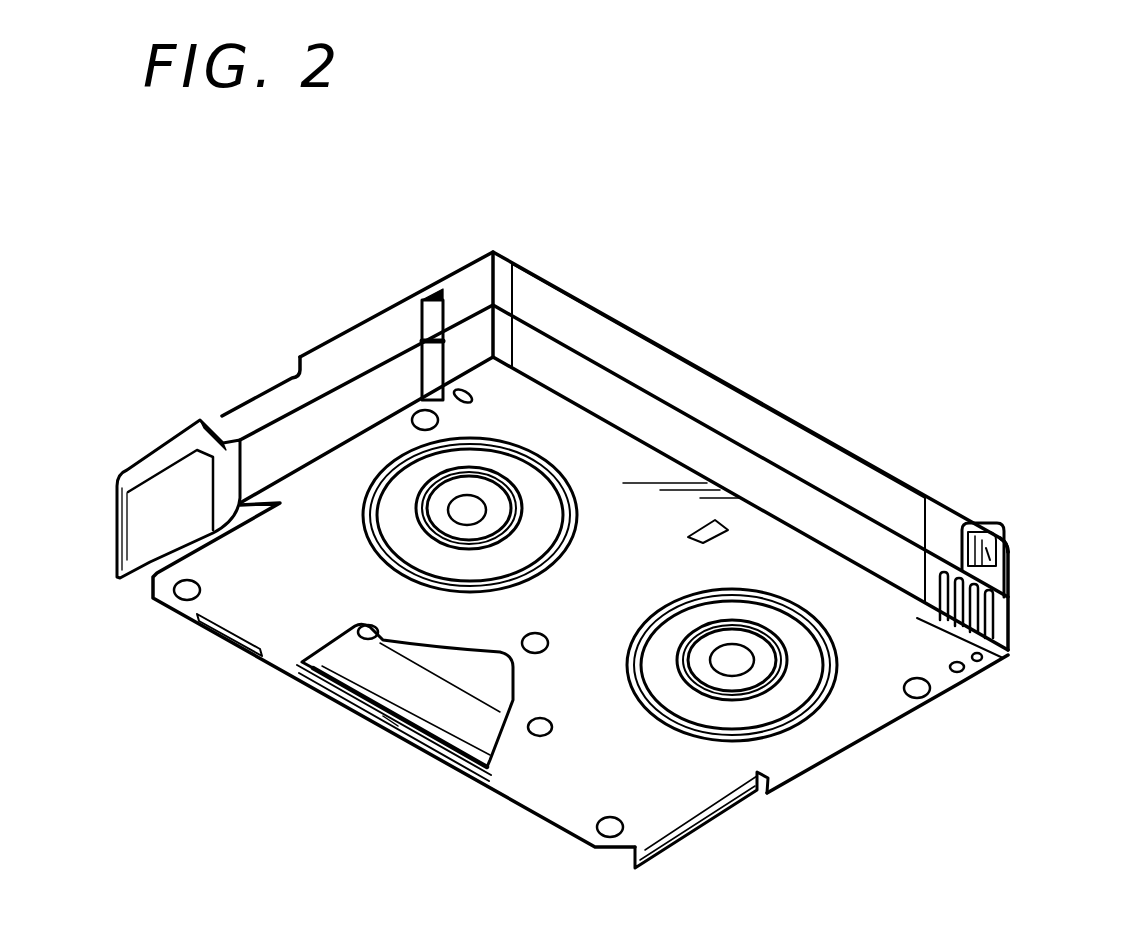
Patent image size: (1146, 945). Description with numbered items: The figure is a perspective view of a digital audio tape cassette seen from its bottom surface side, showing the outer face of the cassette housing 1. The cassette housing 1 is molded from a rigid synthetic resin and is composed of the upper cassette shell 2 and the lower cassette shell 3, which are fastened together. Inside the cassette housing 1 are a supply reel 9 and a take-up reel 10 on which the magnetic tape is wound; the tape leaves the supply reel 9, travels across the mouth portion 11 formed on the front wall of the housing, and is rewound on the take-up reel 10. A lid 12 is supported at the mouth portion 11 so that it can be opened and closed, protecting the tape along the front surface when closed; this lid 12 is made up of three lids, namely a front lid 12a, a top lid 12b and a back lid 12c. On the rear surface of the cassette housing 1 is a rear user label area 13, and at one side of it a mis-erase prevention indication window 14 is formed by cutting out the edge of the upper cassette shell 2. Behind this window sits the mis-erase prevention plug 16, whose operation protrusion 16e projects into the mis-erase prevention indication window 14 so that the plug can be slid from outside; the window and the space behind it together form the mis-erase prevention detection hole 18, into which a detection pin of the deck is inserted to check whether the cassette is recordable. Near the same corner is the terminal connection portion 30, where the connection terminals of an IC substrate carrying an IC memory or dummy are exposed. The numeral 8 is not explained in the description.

The cassette housing 1 is at (267, 254).
The upper cassette shell 2 is at (387, 330).
The lower cassette shell 3 is at (350, 407).
The positioning hole 8 is at (980, 667).
The supply reel 9 is at (517, 470).
The take-up reel 10 is at (780, 700).
The mouth portion 11 is at (383, 718).
The lid 12 is at (282, 637).
The front lid 12a is at (327, 690).
The top lid 12b is at (143, 460).
The back lid 12c is at (450, 727).
The rear user label area 13 is at (757, 403).
The mis-erase prevention indication window 14 is at (973, 523).
The mis-erase prevention plug 16 is at (987, 523).
The operation protrusion 16e is at (990, 557).
The mis-erase prevention detection hole 18 is at (1007, 527).
The terminal connection portion 30 is at (1010, 620).